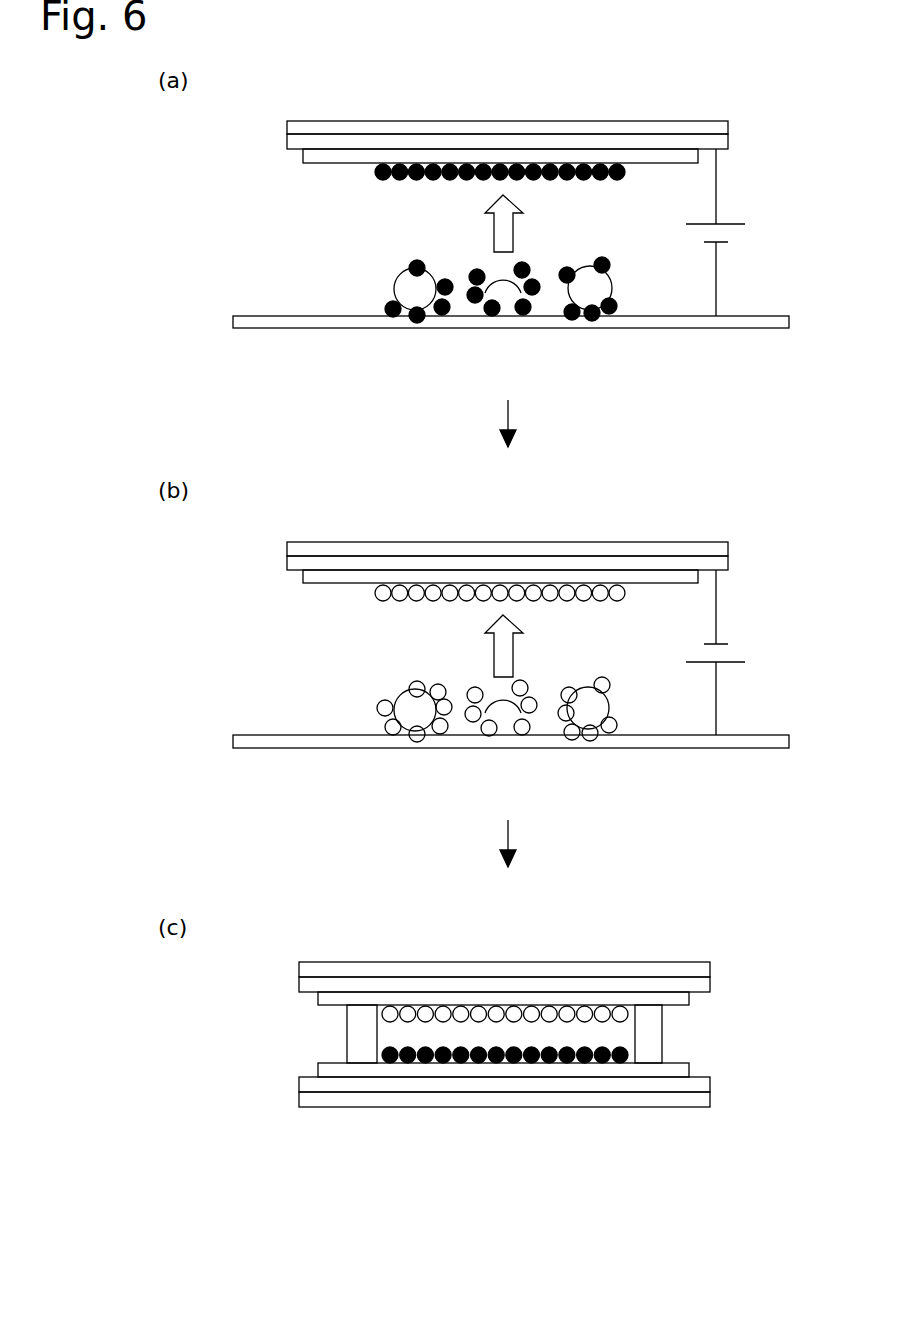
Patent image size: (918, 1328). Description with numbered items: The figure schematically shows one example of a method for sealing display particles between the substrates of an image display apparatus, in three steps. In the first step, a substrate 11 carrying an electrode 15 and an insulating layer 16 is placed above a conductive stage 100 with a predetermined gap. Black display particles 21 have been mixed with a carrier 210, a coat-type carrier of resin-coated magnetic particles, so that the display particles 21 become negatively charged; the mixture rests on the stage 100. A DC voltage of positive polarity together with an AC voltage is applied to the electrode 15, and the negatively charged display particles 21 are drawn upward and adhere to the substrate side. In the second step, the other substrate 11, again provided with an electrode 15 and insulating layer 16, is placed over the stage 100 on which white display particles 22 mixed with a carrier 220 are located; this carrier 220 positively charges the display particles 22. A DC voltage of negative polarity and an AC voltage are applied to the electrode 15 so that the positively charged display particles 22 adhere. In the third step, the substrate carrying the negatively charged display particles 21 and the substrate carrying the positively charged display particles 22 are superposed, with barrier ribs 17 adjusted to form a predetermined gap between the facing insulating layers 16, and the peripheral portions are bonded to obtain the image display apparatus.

The substrate 11 is at (287, 124).
The electrode 15 is at (287, 143).
The insulating layer 16 is at (303, 157).
The barrier rib 17 is at (648, 1053).
The black display particles 21 is at (375, 167).
The carrier 210 is at (403, 287).
The white display particles 22 is at (373, 590).
The carrier 220 is at (403, 707).
The conductive stage 100 is at (669, 320).